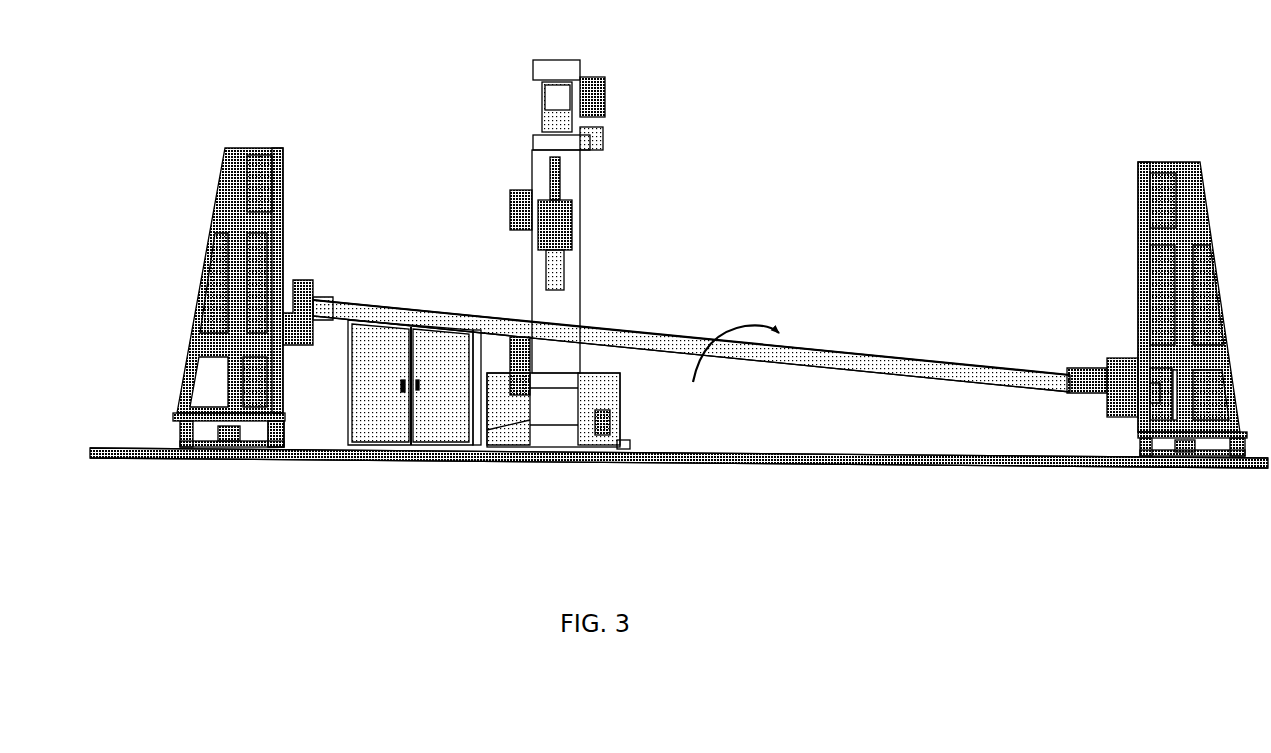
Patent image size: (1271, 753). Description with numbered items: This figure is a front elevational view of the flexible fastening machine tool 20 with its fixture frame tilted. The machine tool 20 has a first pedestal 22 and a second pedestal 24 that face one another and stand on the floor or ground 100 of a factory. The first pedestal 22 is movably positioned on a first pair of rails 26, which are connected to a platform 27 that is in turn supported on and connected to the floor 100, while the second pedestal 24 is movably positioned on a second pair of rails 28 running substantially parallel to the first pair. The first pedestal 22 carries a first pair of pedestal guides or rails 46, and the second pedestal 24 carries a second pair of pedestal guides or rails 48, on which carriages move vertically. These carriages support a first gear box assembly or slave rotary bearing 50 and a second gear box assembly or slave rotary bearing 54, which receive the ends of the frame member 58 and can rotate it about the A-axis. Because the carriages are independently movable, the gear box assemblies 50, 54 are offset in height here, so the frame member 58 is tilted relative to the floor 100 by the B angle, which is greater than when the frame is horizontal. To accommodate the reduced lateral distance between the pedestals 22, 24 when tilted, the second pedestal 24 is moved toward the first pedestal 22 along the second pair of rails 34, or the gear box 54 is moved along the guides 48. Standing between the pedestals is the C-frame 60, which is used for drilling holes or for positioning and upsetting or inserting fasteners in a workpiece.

The flexible fastening machine tool 20 is at (849, 82).
The first pedestal 22 is at (229, 162).
The second pedestal 24 is at (1176, 162).
The first pair of rails 26 is at (270, 436).
The platform 27 is at (274, 442).
The second pair of rails 28 is at (1226, 447).
The second pair of rails 34 is at (985, 455).
The first pair of pedestal guides or rails 46 is at (281, 167).
The second pair of pedestal guides or rails 48 is at (1138, 172).
The first gear box assembly or slave rotary bearing 50 is at (297, 303).
The second gear box assembly or slave rotary bearing 54 is at (1118, 373).
The frame member 58 is at (868, 356).
The C-frame 60 is at (566, 177).
The floor or ground 100 is at (751, 460).
The B angle B is at (736, 341).